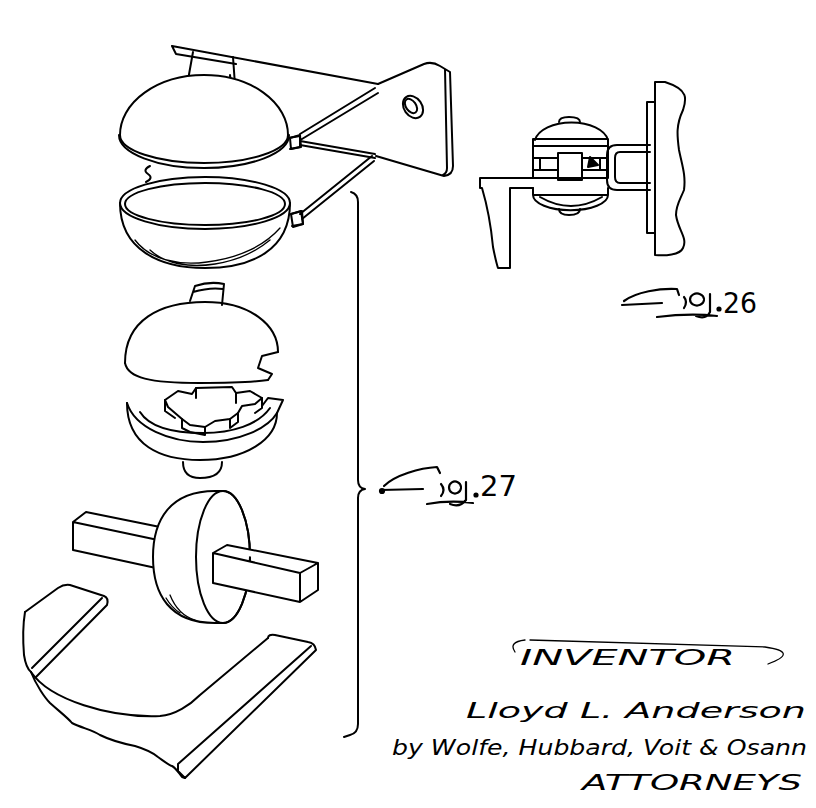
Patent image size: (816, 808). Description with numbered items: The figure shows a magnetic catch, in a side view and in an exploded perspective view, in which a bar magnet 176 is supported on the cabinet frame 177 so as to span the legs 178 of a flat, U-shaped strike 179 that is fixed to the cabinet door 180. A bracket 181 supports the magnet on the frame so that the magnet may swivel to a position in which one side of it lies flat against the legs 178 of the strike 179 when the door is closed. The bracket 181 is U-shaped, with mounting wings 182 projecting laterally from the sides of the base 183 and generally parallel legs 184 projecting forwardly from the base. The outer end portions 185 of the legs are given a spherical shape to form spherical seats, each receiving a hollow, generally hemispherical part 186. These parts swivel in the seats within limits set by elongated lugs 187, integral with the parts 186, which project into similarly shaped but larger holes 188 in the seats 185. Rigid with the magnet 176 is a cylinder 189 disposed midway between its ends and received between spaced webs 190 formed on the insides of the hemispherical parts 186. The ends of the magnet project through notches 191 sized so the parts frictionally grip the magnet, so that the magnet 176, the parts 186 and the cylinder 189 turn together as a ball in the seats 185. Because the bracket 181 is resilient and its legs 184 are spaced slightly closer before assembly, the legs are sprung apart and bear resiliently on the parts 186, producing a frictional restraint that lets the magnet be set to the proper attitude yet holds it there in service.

In FIG. 26, the bar magnet 176 is at (577, 157).
In FIG. 27, the bar magnet 176 is at (200, 554).
In FIG. 26, the cabinet frame 177 is at (670, 177).
In FIG. 27, the legs of the strike 178 is at (84, 595).
In FIG. 27, the strike 179 is at (86, 727).
In FIG. 26, the cabinet door 180 is at (512, 262).
In FIG. 26, the bracket 181 is at (656, 164).
In FIG. 26, the mounting wings 182 is at (650, 112).
In FIG. 27, the mounting wings 182 is at (420, 72).
In FIG. 27, the base 183 is at (363, 152).
In FIG. 27, the legs 184 is at (326, 87).
In FIG. 26, the outer end portions 185 is at (550, 131).
In FIG. 27, the outer end portions 185 is at (127, 200).
In FIG. 26, the hemispherical parts 186 is at (533, 162).
In FIG. 27, the hemispherical parts 186 is at (272, 392).
In FIG. 26, the lugs 187 is at (569, 117).
In FIG. 27, the lugs 187 is at (225, 296).
In FIG. 27, the holes 188 is at (228, 60).
In FIG. 27, the cylinder 189 is at (238, 510).
In FIG. 27, the webs 190 is at (215, 384).
In FIG. 27, the notches 191 is at (280, 357).